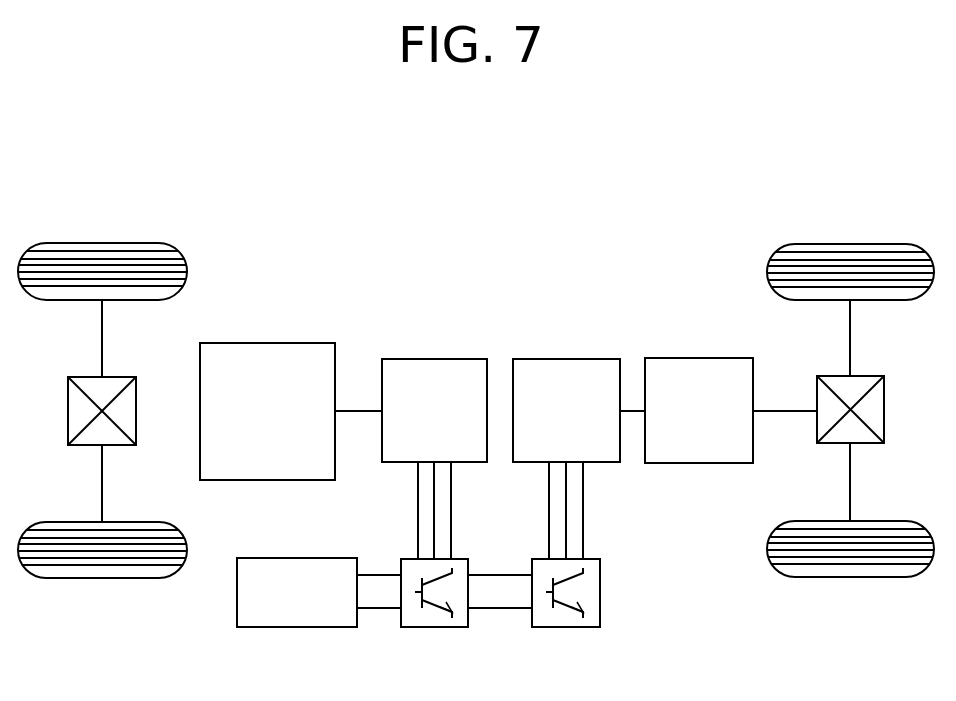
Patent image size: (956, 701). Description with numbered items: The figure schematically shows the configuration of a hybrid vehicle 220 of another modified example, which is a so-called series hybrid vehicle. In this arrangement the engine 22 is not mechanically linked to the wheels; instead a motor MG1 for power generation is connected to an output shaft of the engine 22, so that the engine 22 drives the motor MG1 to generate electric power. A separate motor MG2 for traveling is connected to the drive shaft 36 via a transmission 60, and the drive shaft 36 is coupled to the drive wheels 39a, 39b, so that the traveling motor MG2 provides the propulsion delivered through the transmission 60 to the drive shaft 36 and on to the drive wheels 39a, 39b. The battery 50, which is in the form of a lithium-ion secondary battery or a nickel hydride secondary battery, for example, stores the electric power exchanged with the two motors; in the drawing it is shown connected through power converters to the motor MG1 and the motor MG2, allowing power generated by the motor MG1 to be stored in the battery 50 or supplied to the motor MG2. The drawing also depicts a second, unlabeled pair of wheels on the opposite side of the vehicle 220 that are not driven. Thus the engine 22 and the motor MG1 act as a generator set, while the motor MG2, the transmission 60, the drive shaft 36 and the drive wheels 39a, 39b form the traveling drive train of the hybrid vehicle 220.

The hybrid vehicle 220 is at (705, 227).
The engine 22 is at (268, 342).
The motor for power generation MG1 is at (437, 358).
The motor for traveling MG2 is at (568, 358).
The transmission 60 is at (700, 358).
The drive shaft 36 is at (778, 408).
The drive wheel 39a is at (848, 242).
The drive wheel 39b is at (850, 578).
The battery 50 is at (301, 557).